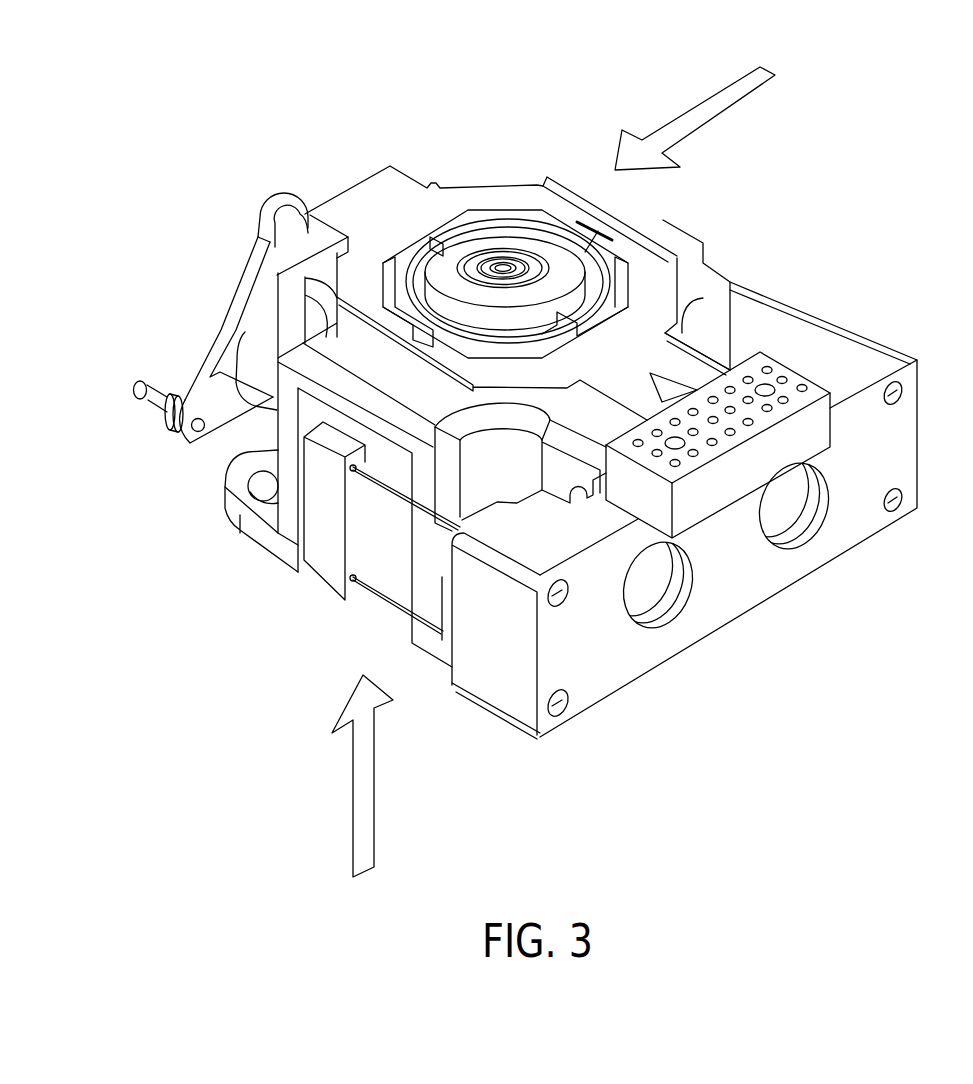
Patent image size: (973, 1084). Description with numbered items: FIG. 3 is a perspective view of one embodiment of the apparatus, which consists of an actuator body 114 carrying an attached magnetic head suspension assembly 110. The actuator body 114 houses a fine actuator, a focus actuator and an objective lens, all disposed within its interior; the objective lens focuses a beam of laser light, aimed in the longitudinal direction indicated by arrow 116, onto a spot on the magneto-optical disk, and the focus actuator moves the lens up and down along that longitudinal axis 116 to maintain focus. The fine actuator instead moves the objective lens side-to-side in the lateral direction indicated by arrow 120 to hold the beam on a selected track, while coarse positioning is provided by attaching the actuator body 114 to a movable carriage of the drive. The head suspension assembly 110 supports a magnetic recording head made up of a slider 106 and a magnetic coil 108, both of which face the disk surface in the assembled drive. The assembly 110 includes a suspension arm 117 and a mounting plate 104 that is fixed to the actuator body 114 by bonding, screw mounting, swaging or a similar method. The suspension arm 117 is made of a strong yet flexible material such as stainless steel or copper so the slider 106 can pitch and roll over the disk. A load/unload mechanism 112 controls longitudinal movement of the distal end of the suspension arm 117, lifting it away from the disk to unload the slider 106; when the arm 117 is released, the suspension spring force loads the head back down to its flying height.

The mounting plate 104 is at (783, 400).
The slider 106 is at (517, 237).
The magnetic coil 108 is at (480, 260).
The magnetic head suspension assembly 110 is at (370, 215).
The load/unload mechanism 112 is at (240, 307).
The actuator body 114 is at (597, 653).
The arrow indicating longitudinal direction 116 is at (373, 820).
The suspension arm 117 is at (652, 303).
The arrow indicating lateral direction 120 is at (725, 112).